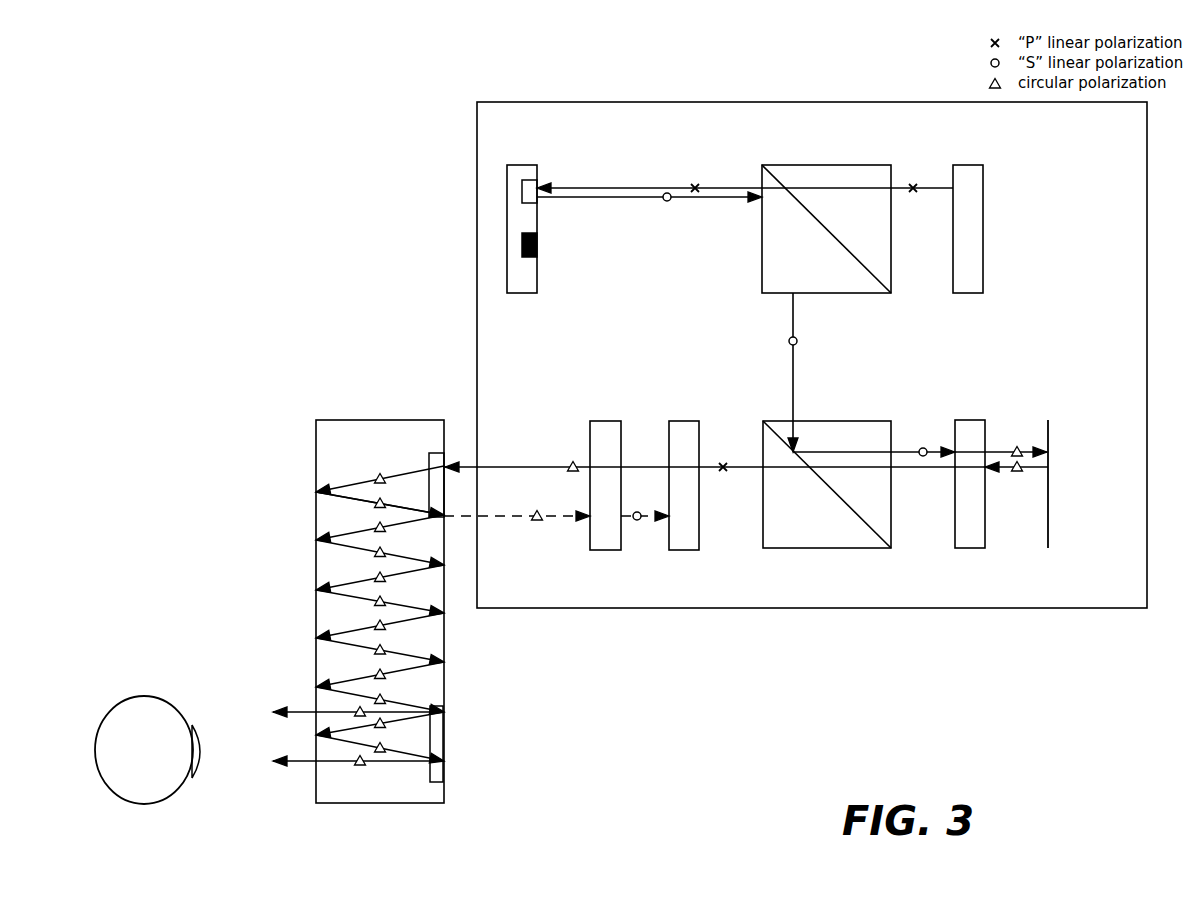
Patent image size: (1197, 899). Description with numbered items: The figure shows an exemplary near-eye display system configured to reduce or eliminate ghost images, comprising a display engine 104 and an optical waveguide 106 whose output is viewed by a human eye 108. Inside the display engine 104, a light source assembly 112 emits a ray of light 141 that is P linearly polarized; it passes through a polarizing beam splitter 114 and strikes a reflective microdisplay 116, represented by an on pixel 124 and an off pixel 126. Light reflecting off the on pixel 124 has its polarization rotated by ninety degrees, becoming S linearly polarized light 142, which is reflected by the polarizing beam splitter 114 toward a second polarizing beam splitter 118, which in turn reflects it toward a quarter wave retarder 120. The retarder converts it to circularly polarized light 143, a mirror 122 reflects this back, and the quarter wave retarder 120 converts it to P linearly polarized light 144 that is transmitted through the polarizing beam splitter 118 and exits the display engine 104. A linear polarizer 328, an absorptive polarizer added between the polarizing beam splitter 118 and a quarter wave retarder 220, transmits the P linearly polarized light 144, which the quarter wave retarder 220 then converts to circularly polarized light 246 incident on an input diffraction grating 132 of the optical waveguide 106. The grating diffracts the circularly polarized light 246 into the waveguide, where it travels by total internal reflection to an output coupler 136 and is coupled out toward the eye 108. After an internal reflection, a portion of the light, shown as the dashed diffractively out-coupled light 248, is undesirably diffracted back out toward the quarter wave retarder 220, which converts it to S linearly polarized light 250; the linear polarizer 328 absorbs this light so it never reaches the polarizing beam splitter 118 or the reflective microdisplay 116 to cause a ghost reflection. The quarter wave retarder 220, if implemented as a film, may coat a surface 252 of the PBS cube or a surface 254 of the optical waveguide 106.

The display engine 104 is at (1045, 610).
The optical waveguide 106 is at (380, 420).
The human eye 108 is at (130, 718).
The light source assembly 112 is at (968, 165).
The polarizing beam splitter 114 is at (772, 165).
The reflective microdisplay 116 is at (518, 165).
The polarizing beam splitter 118 is at (864, 421).
The quarter wave retarder 120 is at (968, 420).
The mirror 122 is at (1049, 420).
The on pixel 124 is at (540, 182).
The off pixel 126 is at (540, 255).
The input diffraction grating 132 is at (438, 453).
The output coupler 136 is at (436, 782).
The ray of light 141 is at (598, 186).
The S linearly polarized light 142 is at (636, 200).
The circularly polarized light 143 is at (996, 456).
The P linearly polarized light 144 is at (704, 463).
The quarter wave retarder 220 is at (610, 421).
The circularly polarized light 246 is at (536, 465).
The diffractively out-coupled light 248 is at (556, 522).
The S linearly polarized light 250 is at (648, 524).
The surface of PBS cube 252 is at (763, 548).
The surface of optical waveguide 254 is at (446, 525).
The linear polarizer 328 is at (688, 421).